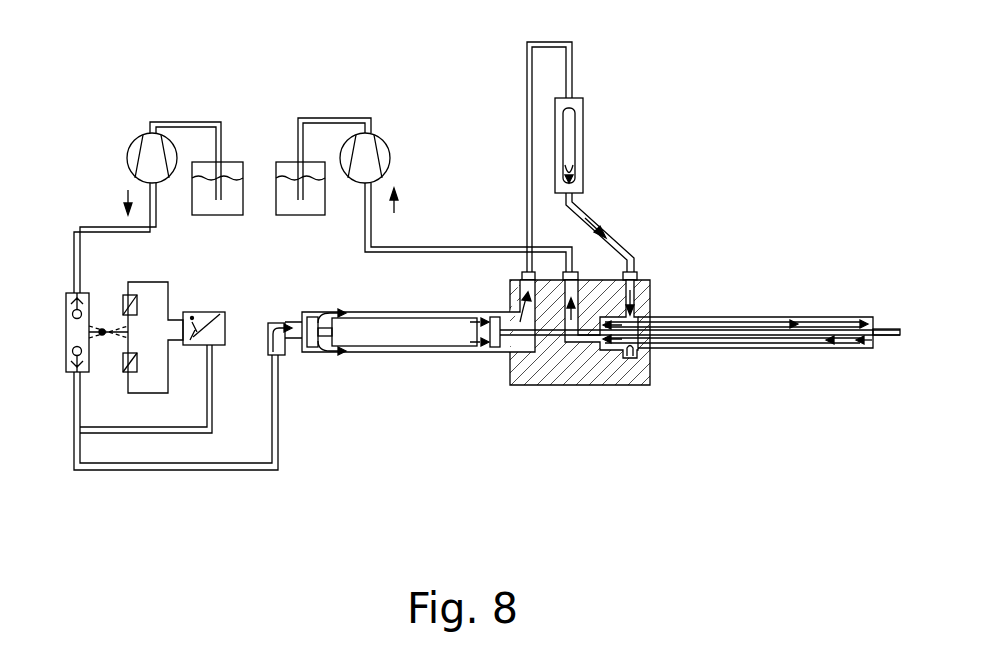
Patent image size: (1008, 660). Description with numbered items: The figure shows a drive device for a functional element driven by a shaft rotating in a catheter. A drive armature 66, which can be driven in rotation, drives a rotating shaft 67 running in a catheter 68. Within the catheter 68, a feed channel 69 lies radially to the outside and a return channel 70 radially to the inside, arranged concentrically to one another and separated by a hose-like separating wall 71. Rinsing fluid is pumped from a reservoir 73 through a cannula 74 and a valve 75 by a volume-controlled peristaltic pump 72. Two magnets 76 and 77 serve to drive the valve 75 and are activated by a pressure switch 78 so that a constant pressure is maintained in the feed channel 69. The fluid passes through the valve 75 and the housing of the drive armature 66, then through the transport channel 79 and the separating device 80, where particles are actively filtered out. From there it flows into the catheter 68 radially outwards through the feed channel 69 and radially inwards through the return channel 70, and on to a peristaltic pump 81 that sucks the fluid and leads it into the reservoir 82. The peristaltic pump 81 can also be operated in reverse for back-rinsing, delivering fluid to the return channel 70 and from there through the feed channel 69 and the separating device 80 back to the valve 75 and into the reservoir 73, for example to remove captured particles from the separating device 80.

The drive armature 66 is at (400, 332).
The rotating shaft 67 is at (893, 318).
The catheter 68 is at (792, 350).
The feed channel 69 is at (633, 297).
The return channel 70 is at (612, 342).
The hose-like separating wall 71 is at (847, 350).
The volume-controlled peristaltic pump 72 is at (145, 130).
The reservoir 73 is at (243, 177).
The cannula 74 is at (74, 268).
The valve 75 is at (67, 353).
The magnet 76 is at (123, 300).
The magnet 77 is at (127, 373).
The pressure switch 78 is at (225, 333).
The transport channel 79 is at (527, 62).
The separating device 80 is at (583, 142).
The peristaltic pump 81 is at (390, 148).
The reservoir 82 is at (287, 183).